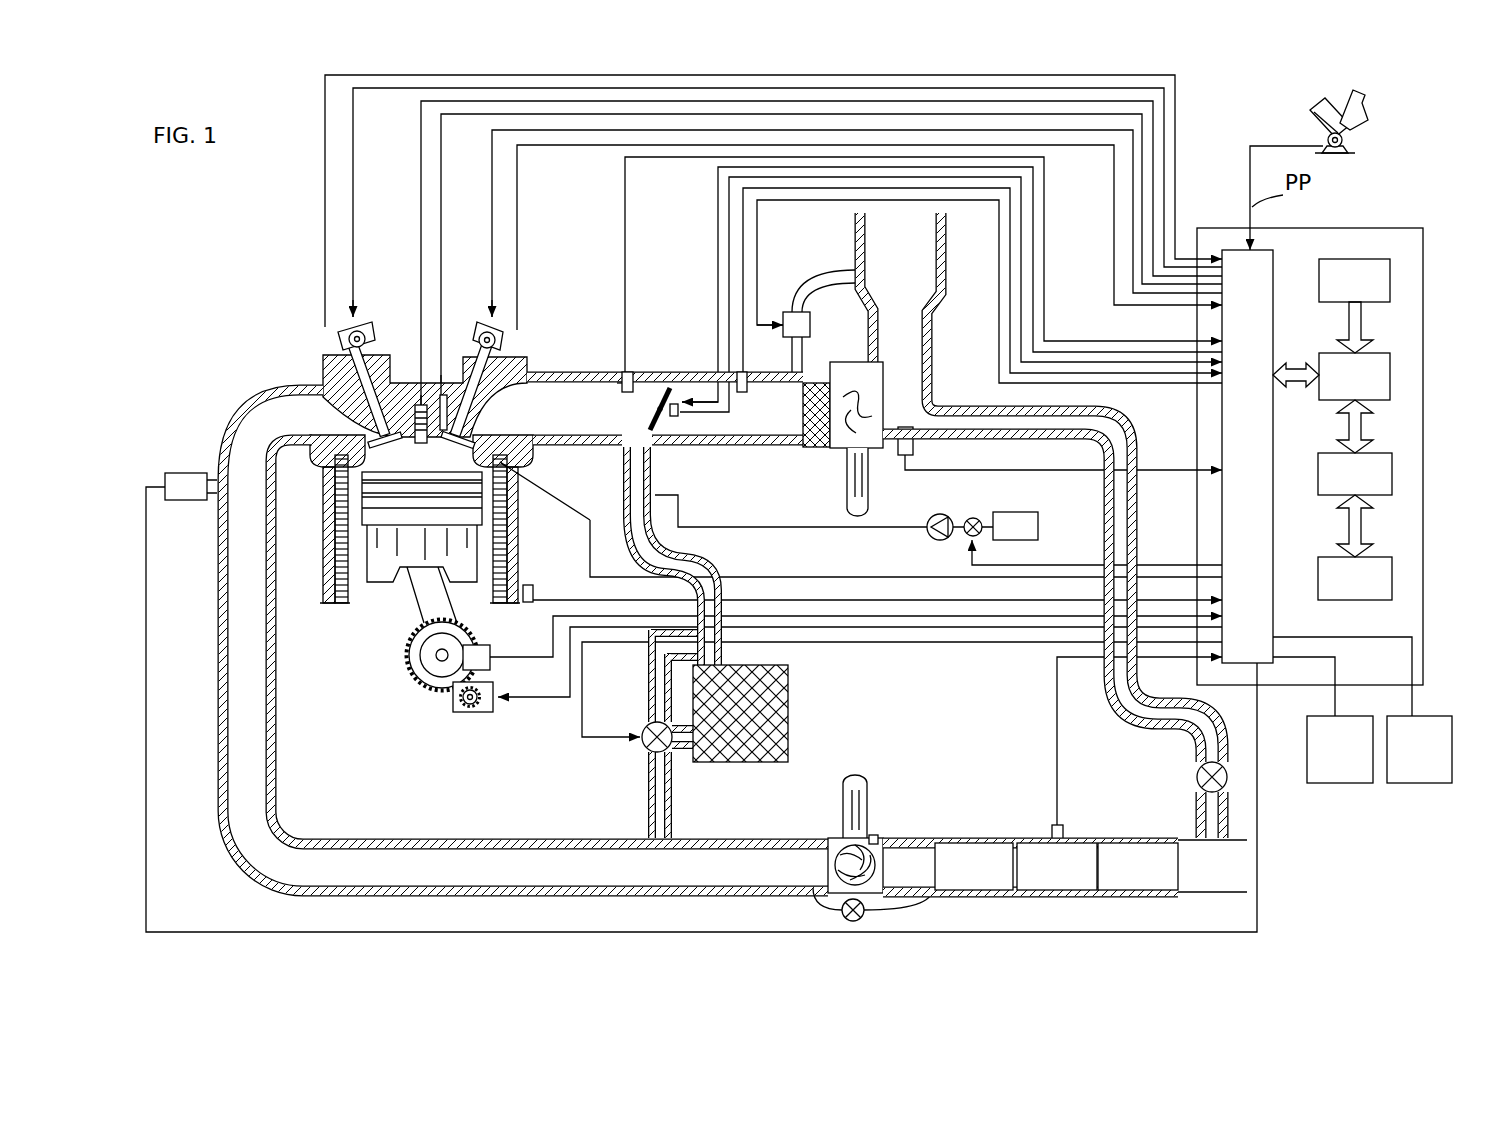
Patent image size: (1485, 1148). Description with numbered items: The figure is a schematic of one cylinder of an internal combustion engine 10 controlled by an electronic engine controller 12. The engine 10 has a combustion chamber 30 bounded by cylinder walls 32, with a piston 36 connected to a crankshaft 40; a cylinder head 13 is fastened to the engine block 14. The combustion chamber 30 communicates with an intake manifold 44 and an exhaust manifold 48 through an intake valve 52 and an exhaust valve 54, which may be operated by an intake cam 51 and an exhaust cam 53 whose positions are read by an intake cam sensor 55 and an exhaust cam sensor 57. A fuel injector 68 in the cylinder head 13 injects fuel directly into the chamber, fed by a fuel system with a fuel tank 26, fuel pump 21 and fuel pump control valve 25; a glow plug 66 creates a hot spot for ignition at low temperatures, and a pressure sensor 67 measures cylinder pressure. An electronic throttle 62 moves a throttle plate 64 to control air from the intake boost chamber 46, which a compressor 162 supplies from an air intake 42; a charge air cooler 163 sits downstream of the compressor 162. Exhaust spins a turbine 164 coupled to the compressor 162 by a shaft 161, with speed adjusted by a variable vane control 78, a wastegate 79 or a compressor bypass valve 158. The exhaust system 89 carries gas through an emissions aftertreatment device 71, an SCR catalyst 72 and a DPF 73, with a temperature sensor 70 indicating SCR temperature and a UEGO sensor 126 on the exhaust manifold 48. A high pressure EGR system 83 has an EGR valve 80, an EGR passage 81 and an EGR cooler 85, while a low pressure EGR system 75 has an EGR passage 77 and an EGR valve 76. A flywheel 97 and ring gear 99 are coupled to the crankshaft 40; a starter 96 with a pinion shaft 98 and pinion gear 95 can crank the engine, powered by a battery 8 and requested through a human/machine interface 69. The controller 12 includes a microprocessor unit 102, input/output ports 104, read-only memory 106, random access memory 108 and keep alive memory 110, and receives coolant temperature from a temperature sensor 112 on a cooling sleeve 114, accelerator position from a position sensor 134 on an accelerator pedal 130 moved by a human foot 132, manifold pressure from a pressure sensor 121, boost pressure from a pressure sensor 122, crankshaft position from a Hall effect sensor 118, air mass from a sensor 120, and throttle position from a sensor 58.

The battery 8 is at (1419, 749).
The internal combustion engine 10 is at (393, 507).
The electronic engine controller 12 is at (1334, 440).
The cylinder head 13 is at (490, 412).
The engine block 14 is at (332, 464).
The fuel pump 21 is at (943, 517).
The fuel pump control valve 25 is at (957, 544).
The fuel tank 26 is at (1001, 538).
The combustion chamber 30 is at (420, 455).
The cylinder walls 32 is at (370, 595).
The piston 36 is at (405, 553).
The crankshaft 40 is at (416, 678).
The air intake 42 is at (884, 290).
The intake manifold 44 is at (556, 424).
The intake boost chamber 46 is at (741, 424).
The exhaust manifold 48 is at (276, 429).
The intake cam 51 is at (490, 330).
The intake valve 52 is at (470, 430).
The exhaust cam 53 is at (358, 330).
The exhaust valve 54 is at (360, 425).
The intake cam sensor 55 is at (500, 348).
The exhaust cam sensor 57 is at (342, 340).
The throttle position sensor 58 is at (672, 417).
The electronic throttle 62 is at (630, 372).
The throttle plate 64 is at (660, 395).
The glow plug 66 is at (417, 395).
The pressure sensor 67 is at (445, 400).
The fuel injector 68 is at (505, 466).
The human/machine interface 69 is at (1340, 749).
The temperature sensor 70 is at (1060, 825).
The emissions aftertreatment device 71 is at (1065, 866).
The selective catalytic reduction catalyst 72 is at (1057, 866).
The diesel particulate filter 73 is at (1138, 866).
The low pressure EGR system 75 is at (1055, 525).
The EGR valve 76 is at (1197, 772).
The EGR passage 77 is at (1108, 700).
The variable vane control 78 is at (880, 838).
The wastegate 79 is at (870, 912).
The EGR valve 80 is at (645, 735).
The EGR passage 81 is at (622, 475).
The high pressure EGR system 83 is at (688, 642).
The EGR cooler 85 is at (790, 705).
The exhaust system 89 is at (477, 639).
The pinion gear 95 is at (482, 707).
The starter 96 is at (467, 720).
The flywheel 97 is at (420, 652).
The pinion shaft 98 is at (470, 707).
The ring gear 99 is at (440, 692).
The microprocessor unit 102 is at (1392, 370).
The input/output ports 104 is at (1273, 260).
The read-only memory 106 is at (1392, 275).
The random access memory 108 is at (1394, 470).
The keep alive memory 110 is at (1394, 570).
The temperature sensor 112 is at (532, 585).
The cooling sleeve 114 is at (340, 518).
The Hall effect sensor 118 is at (490, 648).
The air mass sensor 120 is at (913, 447).
The pressure sensor 121 is at (622, 375).
The pressure sensor 122 is at (748, 372).
The UEGO sensor 126 is at (165, 478).
The accelerator pedal 130 is at (1310, 118).
The human foot 132 is at (1368, 103).
The position sensor 134 is at (1348, 143).
The compressor bypass valve 158 is at (792, 312).
The shaft 161 is at (868, 490).
The compressor 162 is at (840, 445).
The charge air cooler 163 is at (810, 430).
The turbine 164 is at (835, 838).